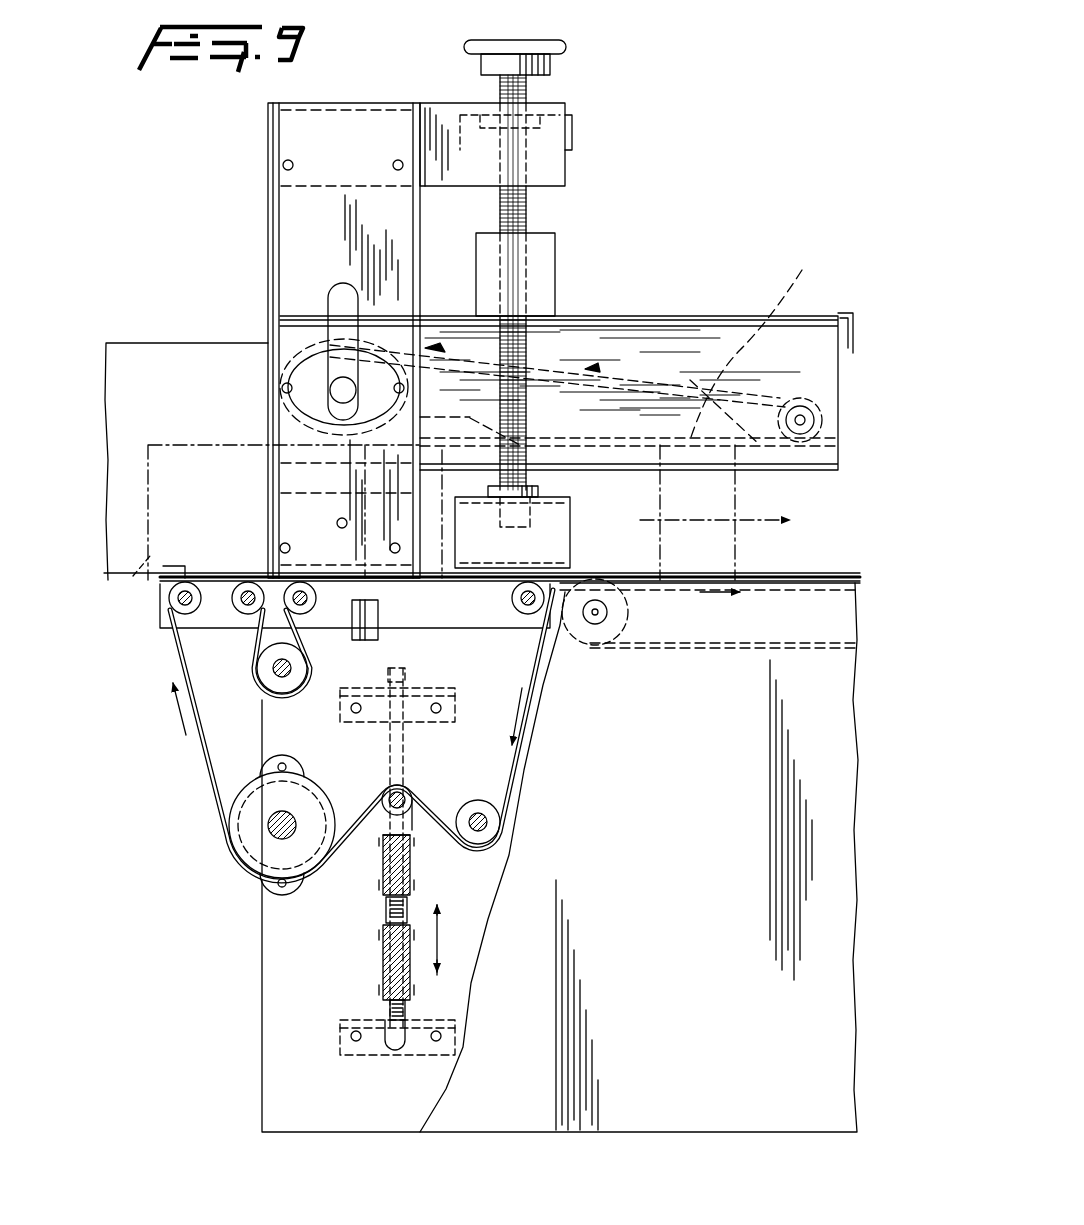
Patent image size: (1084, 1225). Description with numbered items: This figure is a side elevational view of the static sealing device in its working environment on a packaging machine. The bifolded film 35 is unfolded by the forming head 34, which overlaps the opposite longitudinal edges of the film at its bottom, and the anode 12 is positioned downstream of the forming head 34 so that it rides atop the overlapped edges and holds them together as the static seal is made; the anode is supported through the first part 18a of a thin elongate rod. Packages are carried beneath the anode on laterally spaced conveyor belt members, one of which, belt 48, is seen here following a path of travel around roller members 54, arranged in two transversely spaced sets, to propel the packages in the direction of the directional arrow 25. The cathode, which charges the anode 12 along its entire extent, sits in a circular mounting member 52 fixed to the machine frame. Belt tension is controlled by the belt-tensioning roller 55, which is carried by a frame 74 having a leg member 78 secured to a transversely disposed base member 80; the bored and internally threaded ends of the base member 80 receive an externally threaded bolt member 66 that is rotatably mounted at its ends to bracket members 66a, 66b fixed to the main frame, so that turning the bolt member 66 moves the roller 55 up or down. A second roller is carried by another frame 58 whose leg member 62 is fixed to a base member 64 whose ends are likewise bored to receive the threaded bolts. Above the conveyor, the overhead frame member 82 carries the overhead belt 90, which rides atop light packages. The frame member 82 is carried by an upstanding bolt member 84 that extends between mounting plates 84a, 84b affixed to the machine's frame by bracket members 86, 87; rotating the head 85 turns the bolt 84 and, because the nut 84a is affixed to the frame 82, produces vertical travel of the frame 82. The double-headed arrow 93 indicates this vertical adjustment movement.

The anode 12 is at (268, 572).
The first part of rod 18a is at (185, 570).
The directional arrow 25 is at (682, 520).
The forming head 34 is at (190, 350).
The bifolded film 35 is at (563, 578).
The conveyor belt member 48 is at (470, 575).
The circular mounting member 52 is at (370, 632).
The roller members 54 is at (180, 607).
The belt-tensioning roller 55 is at (402, 787).
The frame 58 is at (385, 838).
The leg member 62 is at (380, 955).
The base member 64 is at (378, 995).
The bolt member 66 is at (388, 748).
The bracket member 66a is at (455, 690).
The bracket member 66b is at (340, 1055).
The frame 74 is at (430, 822).
The leg member 78 is at (412, 895).
The base member 80 is at (378, 885).
The frame member 82 is at (655, 330).
The bolt member 84 is at (527, 215).
The mounting plate 84a is at (570, 117).
The mounting plate 84b is at (553, 497).
The head 85 is at (562, 42).
The bracket member 86 is at (427, 105).
The bracket member 87 is at (565, 530).
The overhead belt 90 is at (754, 343).
The arrow 93 is at (437, 945).